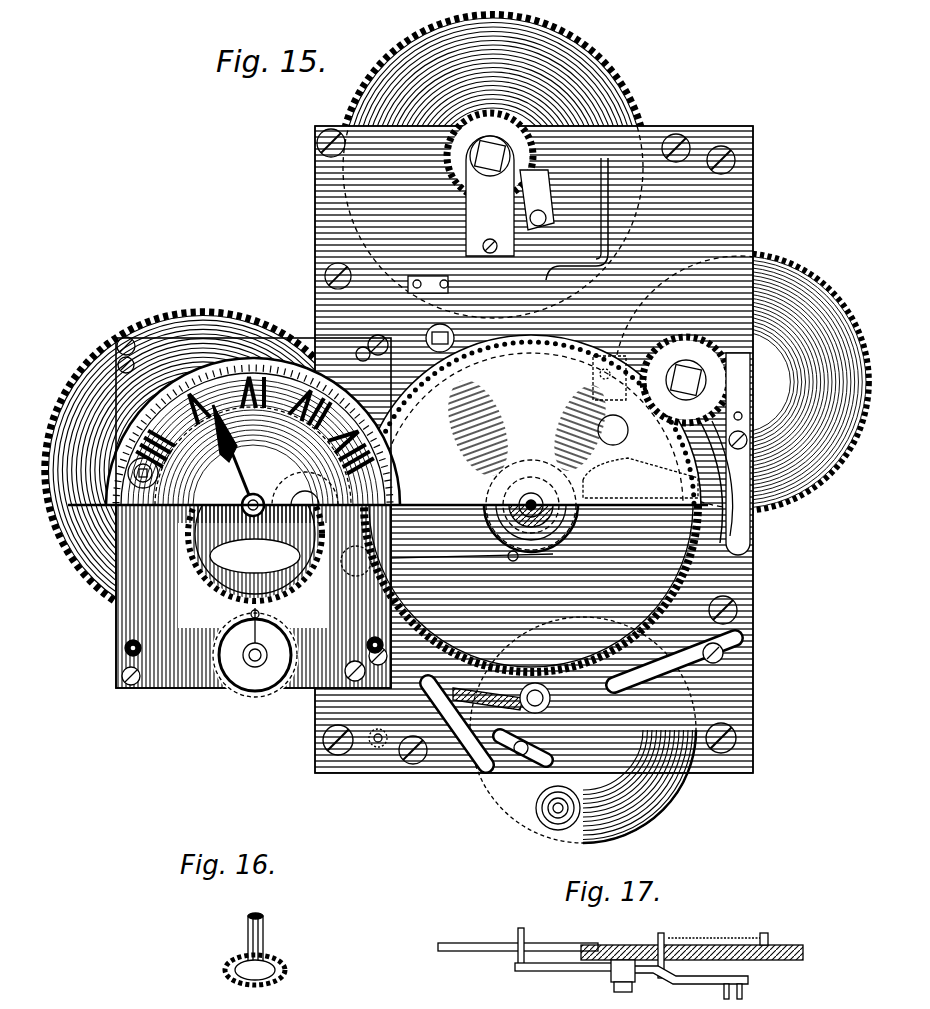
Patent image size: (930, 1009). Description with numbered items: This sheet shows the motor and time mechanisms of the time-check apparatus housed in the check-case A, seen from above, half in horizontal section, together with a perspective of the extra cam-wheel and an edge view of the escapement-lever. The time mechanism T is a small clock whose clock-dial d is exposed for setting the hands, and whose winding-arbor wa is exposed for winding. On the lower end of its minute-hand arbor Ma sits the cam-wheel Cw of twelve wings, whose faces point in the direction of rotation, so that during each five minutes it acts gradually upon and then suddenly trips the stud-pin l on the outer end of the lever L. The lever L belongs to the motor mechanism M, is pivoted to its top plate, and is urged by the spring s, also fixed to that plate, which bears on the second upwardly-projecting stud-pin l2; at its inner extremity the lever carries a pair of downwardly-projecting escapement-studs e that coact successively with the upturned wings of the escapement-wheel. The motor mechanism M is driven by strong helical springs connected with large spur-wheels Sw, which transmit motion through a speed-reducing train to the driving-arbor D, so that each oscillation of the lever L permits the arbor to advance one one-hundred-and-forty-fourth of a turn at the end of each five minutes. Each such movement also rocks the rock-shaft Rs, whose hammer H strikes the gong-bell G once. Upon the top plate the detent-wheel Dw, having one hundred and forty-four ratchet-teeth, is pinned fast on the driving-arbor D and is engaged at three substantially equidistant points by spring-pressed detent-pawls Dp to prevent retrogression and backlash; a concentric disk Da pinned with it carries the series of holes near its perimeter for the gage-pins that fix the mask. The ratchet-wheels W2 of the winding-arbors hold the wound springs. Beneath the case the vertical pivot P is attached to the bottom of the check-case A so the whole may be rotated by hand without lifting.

In FIG. 15, the motor mechanism M is at (516, 449).
In FIG. 17, the motor mechanism M is at (700, 951).
In FIG. 15, the time mechanism T is at (253, 497).
In FIG. 17, the time mechanism T is at (508, 944).
In FIG. 15, the large spur-wheels Sw is at (457, 322).
In FIG. 15, the ratchet wheel W2 is at (598, 334).
In FIG. 15, the driving-arbor D is at (531, 438).
In FIG. 15, the dial wheel ring Da is at (531, 429).
In FIG. 15, the detent-wheel Dw is at (531, 505).
In FIG. 15, the detent-pawls Dp is at (712, 523).
In FIG. 15, the clock-dial d is at (253, 456).
In FIG. 15, the winding-arbor wa is at (150, 466).
In FIG. 15, the minute-hand arbor Ma is at (234, 491).
In FIG. 16, the minute-hand arbor Ma is at (240, 926).
In FIG. 15, the cam-wheel Cw is at (255, 534).
In FIG. 16, the cam-wheel Cw is at (266, 970).
In FIG. 15, the vertical pivot P is at (513, 564).
In FIG. 15, the spring s is at (430, 545).
In FIG. 17, the spring s is at (718, 932).
In FIG. 15, the rock-shaft Rs is at (370, 738).
In FIG. 15, the hammer H is at (495, 758).
In FIG. 15, the gong-bell G is at (583, 734).
In FIG. 15, the check-case A is at (564, 219).
In FIG. 17, the stud-pin l is at (521, 939).
In FIG. 17, the second stud-pin l2 is at (662, 944).
In FIG. 17, the lever L is at (572, 974).
In FIG. 17, the escapement-studs e is at (730, 996).